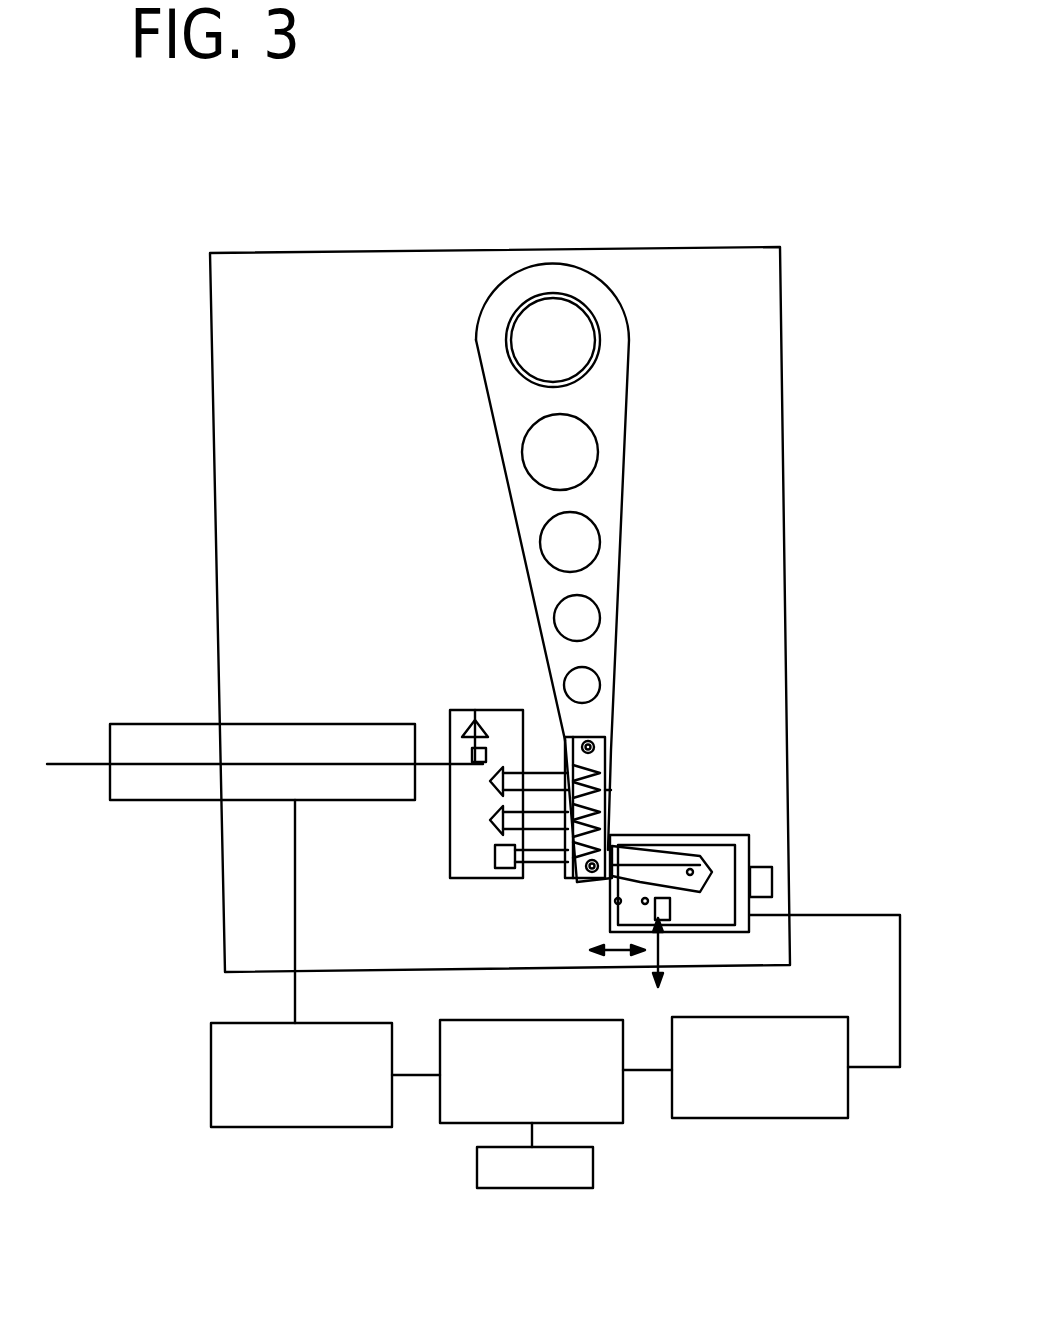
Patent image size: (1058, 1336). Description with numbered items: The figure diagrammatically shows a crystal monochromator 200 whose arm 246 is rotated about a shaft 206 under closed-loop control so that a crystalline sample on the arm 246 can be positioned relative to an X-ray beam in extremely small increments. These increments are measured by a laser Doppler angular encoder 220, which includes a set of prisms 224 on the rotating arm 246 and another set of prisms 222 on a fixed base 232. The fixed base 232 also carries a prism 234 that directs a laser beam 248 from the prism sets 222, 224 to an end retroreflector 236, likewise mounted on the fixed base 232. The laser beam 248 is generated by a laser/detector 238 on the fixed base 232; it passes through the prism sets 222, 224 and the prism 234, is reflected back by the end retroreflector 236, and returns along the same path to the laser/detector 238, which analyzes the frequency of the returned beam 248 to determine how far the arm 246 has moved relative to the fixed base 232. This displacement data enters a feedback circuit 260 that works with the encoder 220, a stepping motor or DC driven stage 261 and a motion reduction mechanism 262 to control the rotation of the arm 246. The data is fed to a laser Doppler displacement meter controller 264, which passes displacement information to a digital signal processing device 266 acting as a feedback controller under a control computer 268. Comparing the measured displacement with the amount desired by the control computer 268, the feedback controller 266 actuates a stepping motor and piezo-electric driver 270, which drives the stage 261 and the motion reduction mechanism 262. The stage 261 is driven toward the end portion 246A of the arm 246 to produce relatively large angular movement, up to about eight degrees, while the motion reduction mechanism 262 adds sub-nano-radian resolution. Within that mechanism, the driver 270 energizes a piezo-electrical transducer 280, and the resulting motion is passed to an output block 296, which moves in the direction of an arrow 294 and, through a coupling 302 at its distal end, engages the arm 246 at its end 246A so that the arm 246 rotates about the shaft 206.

The crystal monochromator 200 is at (430, 641).
The shaft 206 is at (527, 352).
The laser Doppler angular encoder 220 is at (628, 754).
The set of prisms 222 is at (466, 808).
The set of prisms 224 is at (605, 800).
The fixed base 232 is at (468, 861).
The prism 234 is at (472, 752).
The end retroreflector 236 is at (475, 710).
The laser/detector 238 is at (288, 724).
The arm 246 is at (612, 582).
The end portion 246A is at (577, 882).
The laser beam 248 is at (437, 766).
The feedback circuit 260 is at (208, 1174).
The stage 261 is at (778, 918).
The motion reduction mechanism 262 is at (722, 856).
The laser Doppler displacement meter controller 264 is at (228, 1038).
The digital signal processing device 266 is at (617, 1108).
The control computer 268 is at (582, 1172).
The stepping motor and piezo-electric driver 270 is at (833, 1112).
The piezo-electrical transducer 280 is at (760, 882).
The arrow 294 is at (615, 950).
The output block 296 is at (612, 878).
The coupling 302 is at (600, 882).